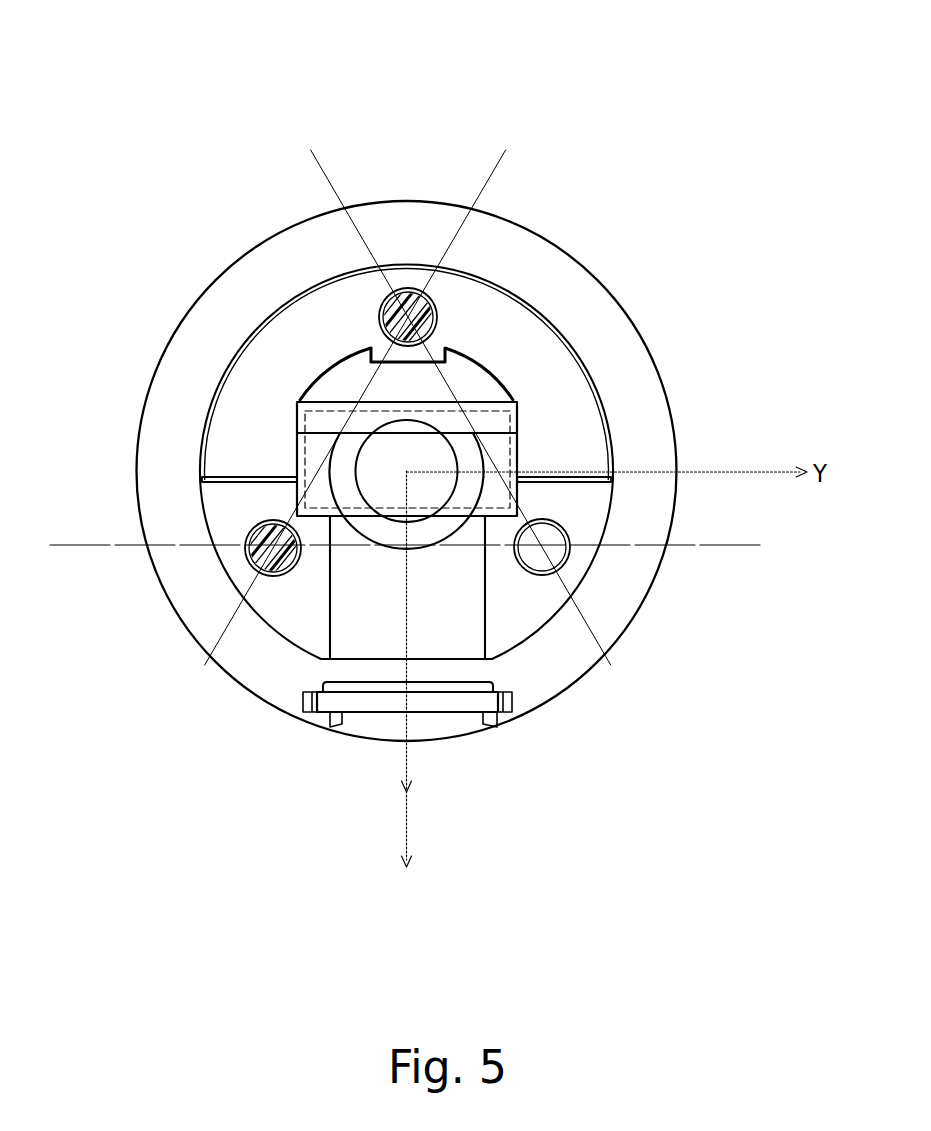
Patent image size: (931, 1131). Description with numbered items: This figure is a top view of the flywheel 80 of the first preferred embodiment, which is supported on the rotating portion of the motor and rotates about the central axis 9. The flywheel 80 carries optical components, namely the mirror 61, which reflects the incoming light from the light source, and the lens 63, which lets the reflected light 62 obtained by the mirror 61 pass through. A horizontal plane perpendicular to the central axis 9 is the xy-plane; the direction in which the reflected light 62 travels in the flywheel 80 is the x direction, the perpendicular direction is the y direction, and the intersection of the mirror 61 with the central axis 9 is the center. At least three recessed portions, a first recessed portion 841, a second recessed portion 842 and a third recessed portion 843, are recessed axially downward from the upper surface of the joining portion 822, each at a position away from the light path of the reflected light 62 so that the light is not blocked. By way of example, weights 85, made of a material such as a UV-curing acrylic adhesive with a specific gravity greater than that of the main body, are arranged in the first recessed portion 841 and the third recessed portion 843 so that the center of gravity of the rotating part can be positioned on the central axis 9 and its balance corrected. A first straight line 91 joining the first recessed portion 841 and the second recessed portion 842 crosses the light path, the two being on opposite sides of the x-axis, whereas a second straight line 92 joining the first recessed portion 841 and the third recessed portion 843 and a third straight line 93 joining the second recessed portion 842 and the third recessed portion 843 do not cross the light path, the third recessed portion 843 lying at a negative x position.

The flywheel 80 is at (547, 103).
The joining portion 822 is at (263, 422).
The weight 85 is at (290, 523).
The second straight line 92 is at (362, 408).
The central axis 9 is at (492, 405).
The mirror 61 is at (520, 450).
The third straight line 93 is at (407, 471).
The third recessed portion 843 is at (407, 288).
The first recessed portion 841 is at (273, 578).
The second recessed portion 842 is at (542, 577).
The lens 63 is at (448, 700).
The reflected light 62 is at (403, 772).
The first straight line 91 is at (707, 545).